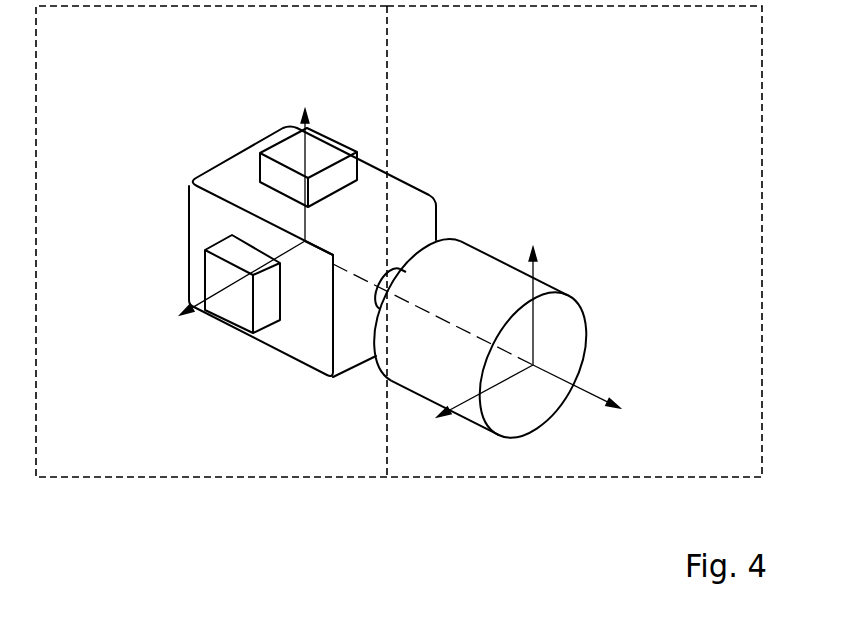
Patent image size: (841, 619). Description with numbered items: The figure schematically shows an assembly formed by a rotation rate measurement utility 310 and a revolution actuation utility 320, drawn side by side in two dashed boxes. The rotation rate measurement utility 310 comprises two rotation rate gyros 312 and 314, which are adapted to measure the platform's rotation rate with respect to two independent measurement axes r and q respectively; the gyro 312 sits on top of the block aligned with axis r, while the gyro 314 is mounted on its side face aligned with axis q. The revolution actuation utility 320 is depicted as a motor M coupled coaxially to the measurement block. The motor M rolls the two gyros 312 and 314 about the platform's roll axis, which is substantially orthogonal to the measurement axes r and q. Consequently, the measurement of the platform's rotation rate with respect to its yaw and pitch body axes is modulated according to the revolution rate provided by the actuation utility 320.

The rotation rate measurement utility 310 is at (155, 103).
The rotation rate gyro 312 is at (287, 155).
The rotation rate gyro 314 is at (217, 277).
The revolution actuation utility 320 is at (588, 104).
The motor M is at (573, 325).